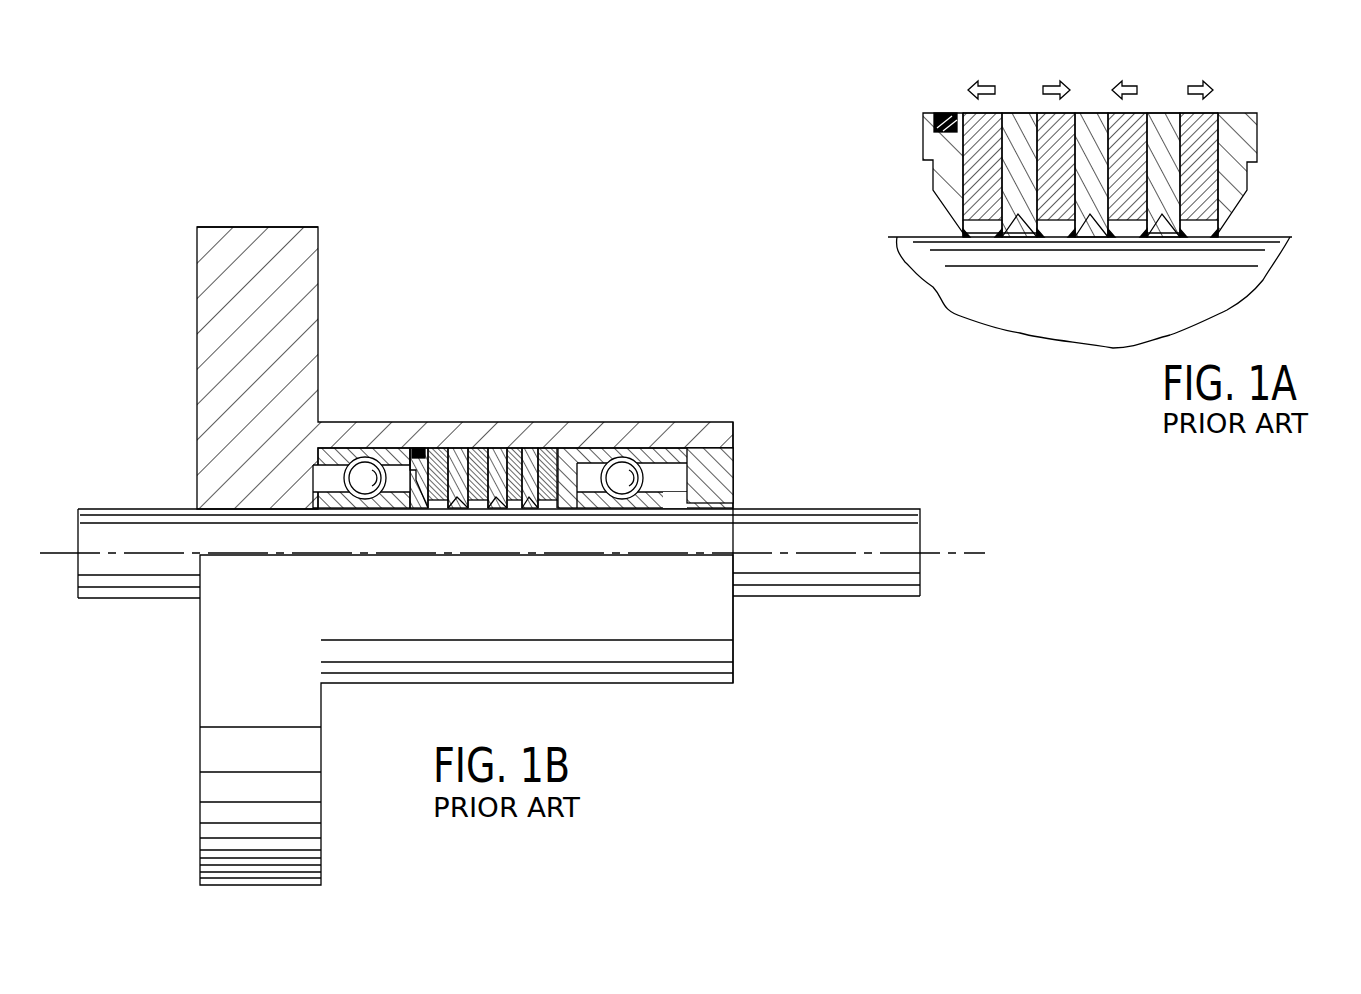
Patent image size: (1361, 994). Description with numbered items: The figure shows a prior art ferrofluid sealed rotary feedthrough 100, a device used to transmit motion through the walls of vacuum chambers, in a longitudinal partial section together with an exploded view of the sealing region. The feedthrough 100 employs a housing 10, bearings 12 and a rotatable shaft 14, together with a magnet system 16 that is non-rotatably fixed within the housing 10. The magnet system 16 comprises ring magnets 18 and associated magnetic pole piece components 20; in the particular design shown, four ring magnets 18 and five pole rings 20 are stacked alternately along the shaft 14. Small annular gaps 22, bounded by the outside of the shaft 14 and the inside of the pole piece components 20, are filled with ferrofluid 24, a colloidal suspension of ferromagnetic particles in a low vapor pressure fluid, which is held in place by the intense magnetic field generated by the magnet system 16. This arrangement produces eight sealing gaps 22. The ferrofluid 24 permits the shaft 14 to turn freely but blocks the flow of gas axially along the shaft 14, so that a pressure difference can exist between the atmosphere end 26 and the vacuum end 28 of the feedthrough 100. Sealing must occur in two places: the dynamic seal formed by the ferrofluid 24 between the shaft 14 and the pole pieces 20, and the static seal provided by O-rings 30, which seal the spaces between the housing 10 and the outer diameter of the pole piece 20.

In FIG. 1B, the feedthrough 100 is at (188, 202).
In FIG. 1B, the housing 10 is at (197, 300).
In FIG. 1B, the bearings 12 is at (365, 463).
In FIG. 1A, the rotatable shaft 14 is at (1104, 317).
In FIG. 1B, the rotatable shaft 14 is at (797, 508).
In FIG. 1A, the magnet system 16 is at (1268, 139).
In FIG. 1A, the ring magnet 18 is at (1037, 113).
In FIG. 1A, the magnetic pole piece components 20 is at (1160, 113).
In FIG. 1A, the annular gaps 22 is at (1033, 237).
In FIG. 1A, the ferrofluid 24 is at (1150, 237).
In FIG. 1B, the atmosphere end 26 is at (912, 668).
In FIG. 1B, the vacuum end 28 is at (112, 671).
In FIG. 1A, the O-rings 30 is at (940, 113).
In FIG. 1B, the O-rings 30 is at (418, 448).